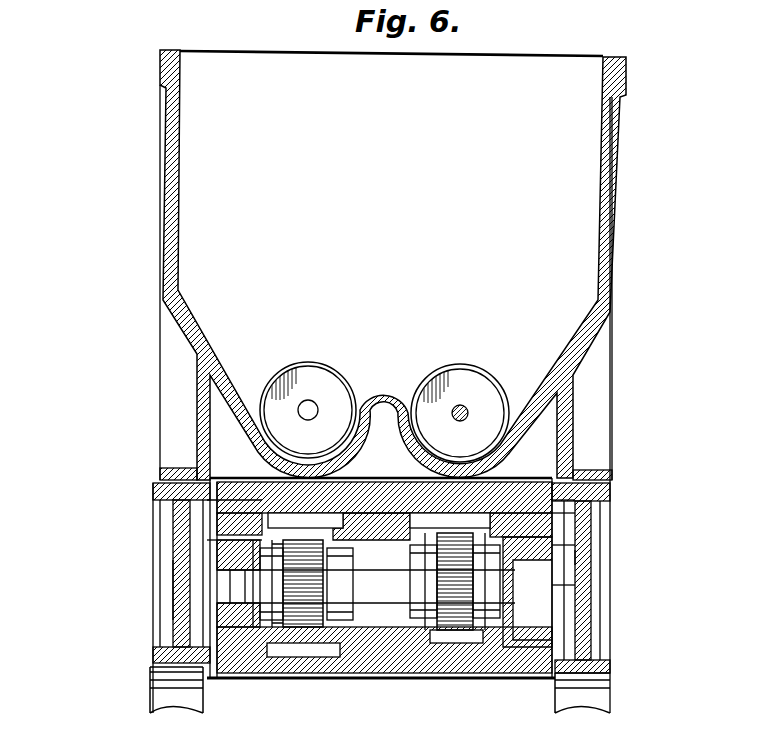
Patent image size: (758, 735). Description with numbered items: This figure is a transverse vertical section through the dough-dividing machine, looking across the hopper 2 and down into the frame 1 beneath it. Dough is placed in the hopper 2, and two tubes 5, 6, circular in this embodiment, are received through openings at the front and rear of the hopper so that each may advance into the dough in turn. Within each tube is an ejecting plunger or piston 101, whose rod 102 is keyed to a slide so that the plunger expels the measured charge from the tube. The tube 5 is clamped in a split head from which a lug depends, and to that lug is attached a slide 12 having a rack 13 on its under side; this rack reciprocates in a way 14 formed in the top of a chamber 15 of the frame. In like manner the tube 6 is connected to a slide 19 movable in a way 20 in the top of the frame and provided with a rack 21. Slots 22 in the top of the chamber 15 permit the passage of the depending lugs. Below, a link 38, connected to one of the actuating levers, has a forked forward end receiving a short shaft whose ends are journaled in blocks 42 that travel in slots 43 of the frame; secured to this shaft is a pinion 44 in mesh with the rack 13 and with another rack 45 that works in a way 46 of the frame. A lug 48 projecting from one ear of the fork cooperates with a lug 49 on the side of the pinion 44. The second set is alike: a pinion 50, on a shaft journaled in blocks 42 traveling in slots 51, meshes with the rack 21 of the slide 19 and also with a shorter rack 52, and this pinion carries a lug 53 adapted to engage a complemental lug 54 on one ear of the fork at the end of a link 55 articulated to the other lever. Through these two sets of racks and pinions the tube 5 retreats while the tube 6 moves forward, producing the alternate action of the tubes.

The frame 1 is at (160, 617).
The hopper 2 is at (615, 232).
The tube 5 is at (308, 384).
The tube 6 is at (474, 394).
The ejecting plunger or piston 101 is at (303, 422).
The plunger rod 102 is at (455, 420).
The slide 12 is at (253, 513).
The rack 13 is at (230, 535).
The way 14 is at (258, 524).
The chamber 15 is at (530, 592).
The slide 19 is at (617, 513).
The way 20 is at (545, 525).
The rack 21 is at (540, 540).
The slots 22 is at (407, 527).
The link 38 is at (262, 652).
The blocks 42 is at (240, 586).
The slots 43 is at (173, 583).
The pinion 44 is at (290, 630).
The rack 45 is at (300, 655).
The way 46 is at (330, 652).
The lug 48 is at (258, 588).
The lug 49 is at (247, 568).
The pinion 50 is at (408, 650).
The slots 51 is at (560, 585).
The rack 52 is at (430, 655).
The lug 53 is at (442, 652).
The lug 54 is at (593, 557).
The link 55 is at (487, 652).